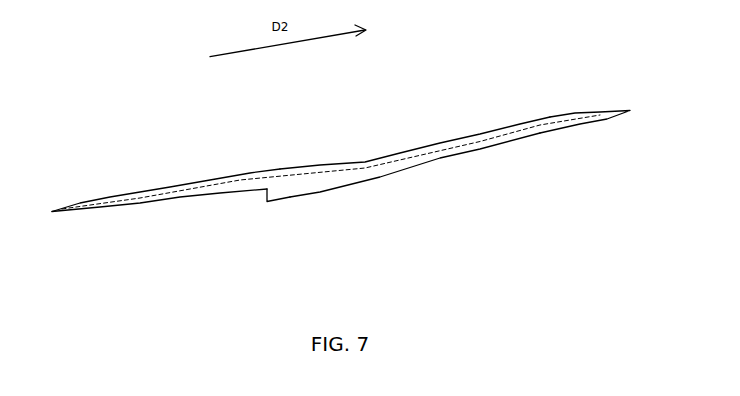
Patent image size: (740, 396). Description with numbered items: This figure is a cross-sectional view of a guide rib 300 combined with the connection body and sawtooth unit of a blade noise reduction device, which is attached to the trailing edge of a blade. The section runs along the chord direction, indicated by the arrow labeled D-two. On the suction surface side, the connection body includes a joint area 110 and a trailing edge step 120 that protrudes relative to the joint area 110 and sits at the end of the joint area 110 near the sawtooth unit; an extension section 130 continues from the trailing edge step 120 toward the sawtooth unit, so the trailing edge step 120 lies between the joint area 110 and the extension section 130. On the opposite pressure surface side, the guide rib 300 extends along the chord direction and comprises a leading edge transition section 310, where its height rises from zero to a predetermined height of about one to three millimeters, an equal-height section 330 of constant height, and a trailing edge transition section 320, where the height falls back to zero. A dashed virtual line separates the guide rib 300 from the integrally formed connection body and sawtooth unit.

The guide rib 300 is at (341, 166).
The leading edge transition section 310 is at (160, 186).
The trailing edge transition section 320 is at (554, 117).
The equal-height section 330 is at (367, 162).
The joint area 110 is at (203, 192).
The trailing edge step 120 is at (267, 198).
The extension section 130 is at (300, 186).